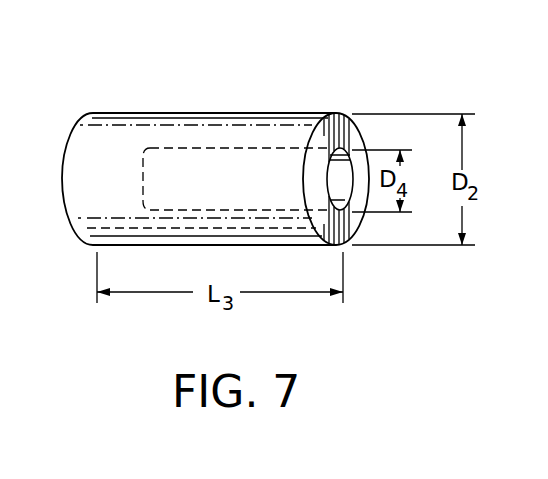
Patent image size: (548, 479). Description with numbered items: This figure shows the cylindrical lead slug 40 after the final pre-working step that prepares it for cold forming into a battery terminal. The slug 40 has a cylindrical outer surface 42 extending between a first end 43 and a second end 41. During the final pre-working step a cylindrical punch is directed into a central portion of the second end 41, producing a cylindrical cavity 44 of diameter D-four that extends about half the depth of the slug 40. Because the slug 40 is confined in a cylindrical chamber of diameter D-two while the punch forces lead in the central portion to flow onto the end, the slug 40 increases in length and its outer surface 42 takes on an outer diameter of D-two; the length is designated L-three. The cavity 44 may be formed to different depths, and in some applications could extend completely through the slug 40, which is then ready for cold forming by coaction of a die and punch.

The cylindrical lead slug 40 is at (208, 111).
The second end 41 is at (342, 121).
The cylindrical outer surface 42 is at (77, 205).
The first end 43 is at (68, 143).
The bore 44 is at (334, 191).